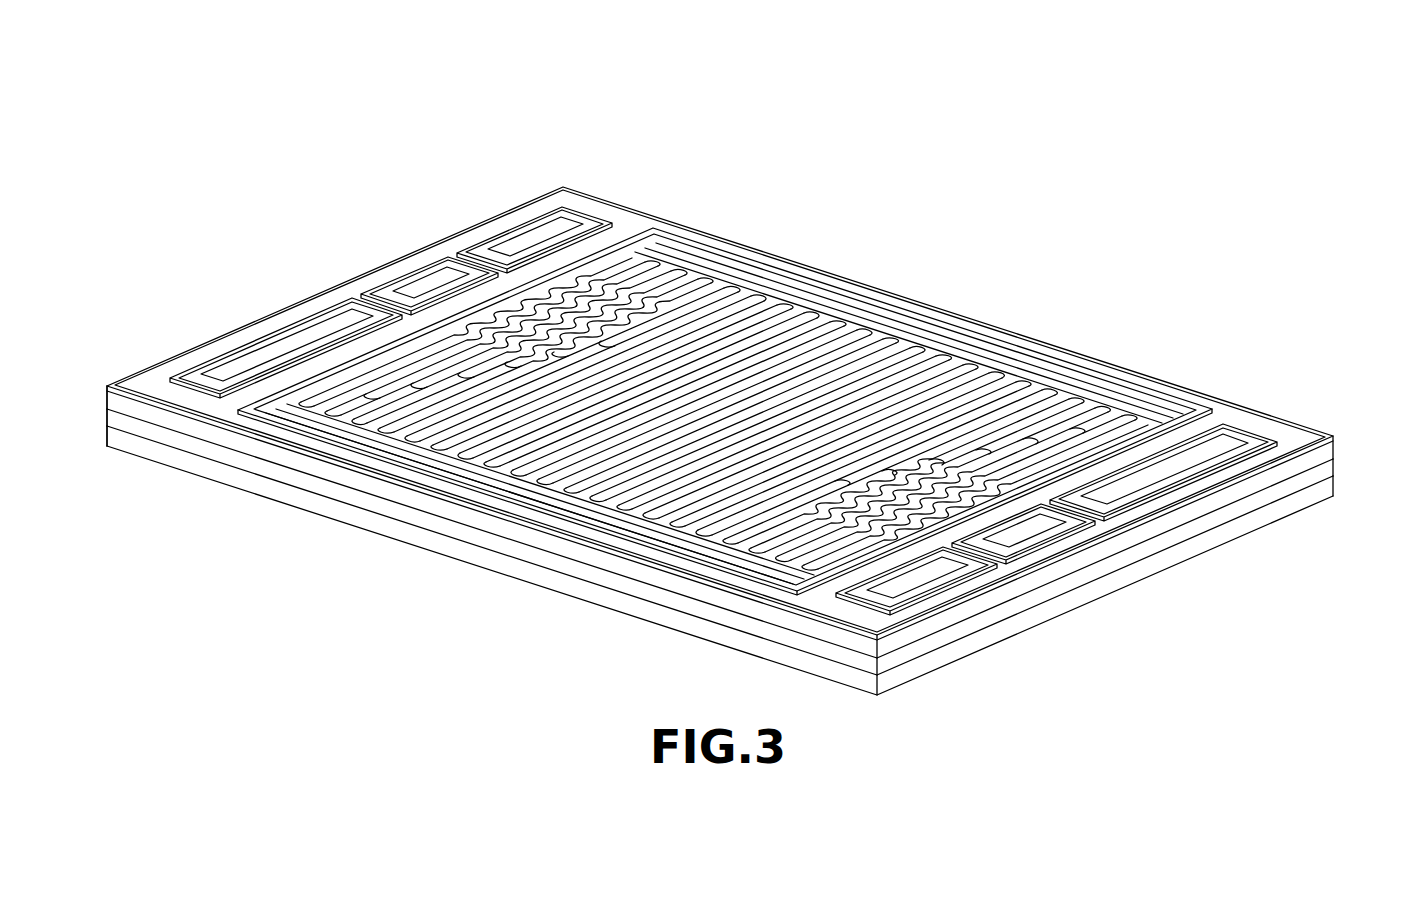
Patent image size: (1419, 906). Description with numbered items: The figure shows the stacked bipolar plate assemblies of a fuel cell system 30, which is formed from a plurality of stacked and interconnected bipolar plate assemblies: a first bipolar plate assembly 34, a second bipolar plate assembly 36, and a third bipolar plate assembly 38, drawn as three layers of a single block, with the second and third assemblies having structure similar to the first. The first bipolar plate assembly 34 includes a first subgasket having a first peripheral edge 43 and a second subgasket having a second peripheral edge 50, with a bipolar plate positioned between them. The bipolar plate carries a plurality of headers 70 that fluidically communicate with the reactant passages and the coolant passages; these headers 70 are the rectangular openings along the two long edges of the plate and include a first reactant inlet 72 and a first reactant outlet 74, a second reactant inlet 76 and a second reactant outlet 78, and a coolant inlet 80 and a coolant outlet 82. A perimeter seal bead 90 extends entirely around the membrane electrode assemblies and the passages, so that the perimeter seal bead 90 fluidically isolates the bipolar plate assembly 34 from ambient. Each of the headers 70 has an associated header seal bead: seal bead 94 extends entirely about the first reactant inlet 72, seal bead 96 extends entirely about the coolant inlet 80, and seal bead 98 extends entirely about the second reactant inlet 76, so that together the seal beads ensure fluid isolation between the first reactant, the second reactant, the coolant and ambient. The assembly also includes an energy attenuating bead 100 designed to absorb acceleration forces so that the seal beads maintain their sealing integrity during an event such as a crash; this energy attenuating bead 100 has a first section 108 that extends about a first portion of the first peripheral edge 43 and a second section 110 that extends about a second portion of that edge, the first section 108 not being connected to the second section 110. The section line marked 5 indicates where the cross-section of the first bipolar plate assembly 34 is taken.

The section line 5- 5 is at (343, 182).
The fuel cell system 30 is at (725, 376).
The first bipolar plate assembly 34 is at (1342, 452).
The second bipolar plate assembly 36 is at (1272, 508).
The third bipolar plate assembly 38 is at (1232, 548).
The first peripheral edge 43 is at (601, 200).
The second peripheral edge 50 is at (112, 414).
The plurality of headers 70 is at (360, 283).
The first reactant inlet 72 is at (542, 225).
The first reactant outlet 74 is at (928, 586).
The second reactant inlet 76 is at (256, 345).
The second reactant outlet 78 is at (1188, 448).
The coolant inlet 80 is at (392, 283).
The coolant outlet 82 is at (1032, 542).
The perimeter seal bead 90 is at (778, 268).
The header seal bead 94 is at (572, 243).
The header seal bead 96 is at (384, 282).
The header seal bead 98 is at (190, 377).
The energy attenuating bead 100 is at (360, 264).
The first section 108 is at (540, 192).
The second section 110 is at (1113, 530).